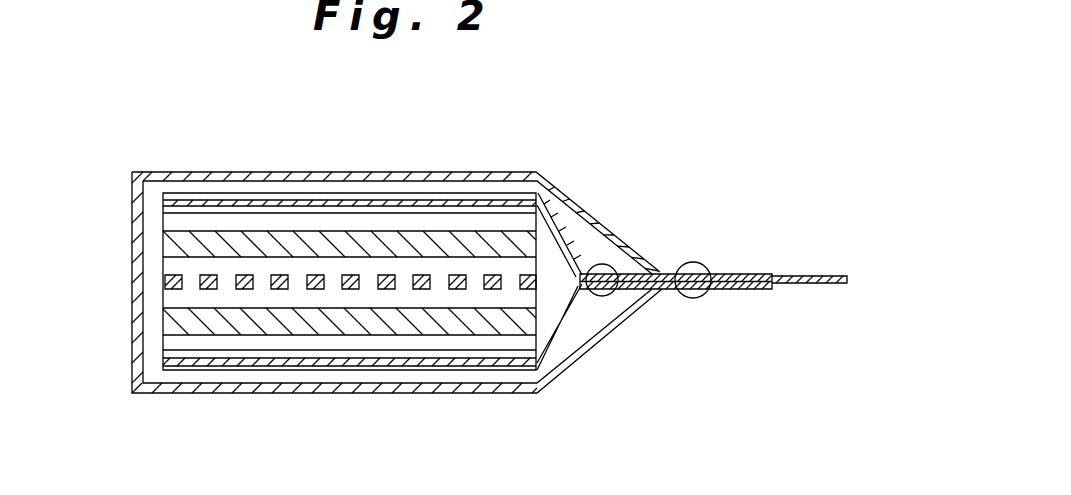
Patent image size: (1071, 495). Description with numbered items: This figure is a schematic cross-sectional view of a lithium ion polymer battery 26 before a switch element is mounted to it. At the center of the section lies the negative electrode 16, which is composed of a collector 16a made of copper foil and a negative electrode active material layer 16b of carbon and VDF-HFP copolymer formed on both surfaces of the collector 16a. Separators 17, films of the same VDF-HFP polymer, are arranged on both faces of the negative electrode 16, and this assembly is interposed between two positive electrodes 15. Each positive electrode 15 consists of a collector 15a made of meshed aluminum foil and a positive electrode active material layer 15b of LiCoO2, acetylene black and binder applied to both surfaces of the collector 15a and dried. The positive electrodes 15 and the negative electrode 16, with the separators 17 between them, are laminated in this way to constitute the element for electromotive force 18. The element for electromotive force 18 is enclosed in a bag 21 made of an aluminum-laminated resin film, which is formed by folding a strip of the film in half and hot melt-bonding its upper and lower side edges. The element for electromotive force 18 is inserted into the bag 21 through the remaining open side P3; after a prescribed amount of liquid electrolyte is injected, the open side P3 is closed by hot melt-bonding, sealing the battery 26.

The positive electrode 15 is at (235, 200).
The collector 15a is at (222, 198).
The positive electrode active material layer 15b is at (247, 200).
The negative electrode 16 is at (403, 269).
The collector 16a is at (356, 270).
The negative electrode active material layer 16b is at (453, 265).
The separator 17 is at (293, 337).
The element for electromotive force 18 is at (165, 282).
The bag 21 is at (590, 207).
The battery 26 is at (553, 128).
The open side P3 is at (700, 262).